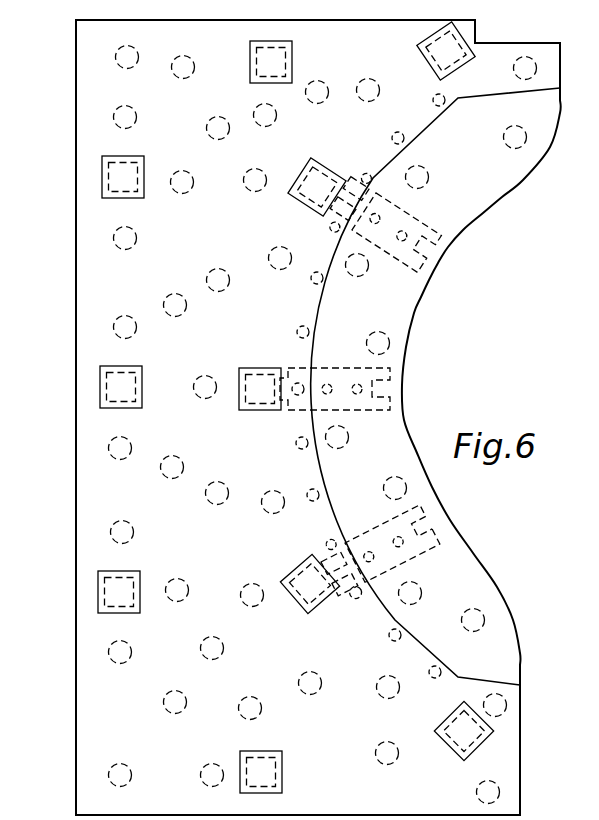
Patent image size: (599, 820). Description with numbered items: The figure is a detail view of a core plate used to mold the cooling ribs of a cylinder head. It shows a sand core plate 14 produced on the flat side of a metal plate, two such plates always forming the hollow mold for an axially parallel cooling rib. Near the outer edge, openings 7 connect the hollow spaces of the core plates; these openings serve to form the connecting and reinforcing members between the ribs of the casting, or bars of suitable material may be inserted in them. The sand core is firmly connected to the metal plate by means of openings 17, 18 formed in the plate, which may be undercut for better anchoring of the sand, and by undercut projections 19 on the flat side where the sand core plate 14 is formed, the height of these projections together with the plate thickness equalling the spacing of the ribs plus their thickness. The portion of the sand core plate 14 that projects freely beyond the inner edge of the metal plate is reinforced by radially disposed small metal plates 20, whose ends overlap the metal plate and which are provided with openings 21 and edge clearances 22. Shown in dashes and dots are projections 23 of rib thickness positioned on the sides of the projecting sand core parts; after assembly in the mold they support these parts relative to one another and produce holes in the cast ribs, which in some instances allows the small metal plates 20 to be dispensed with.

The openings 7 is at (97, 387).
The sand core plate 14 is at (390, 313).
The openings 17 is at (380, 693).
The openings 18 is at (362, 598).
The undercut projections 19 is at (283, 772).
The small metal plates 20 is at (372, 583).
The openings 21 is at (397, 538).
The edge clearances 22 is at (425, 521).
The projections 23 is at (421, 593).